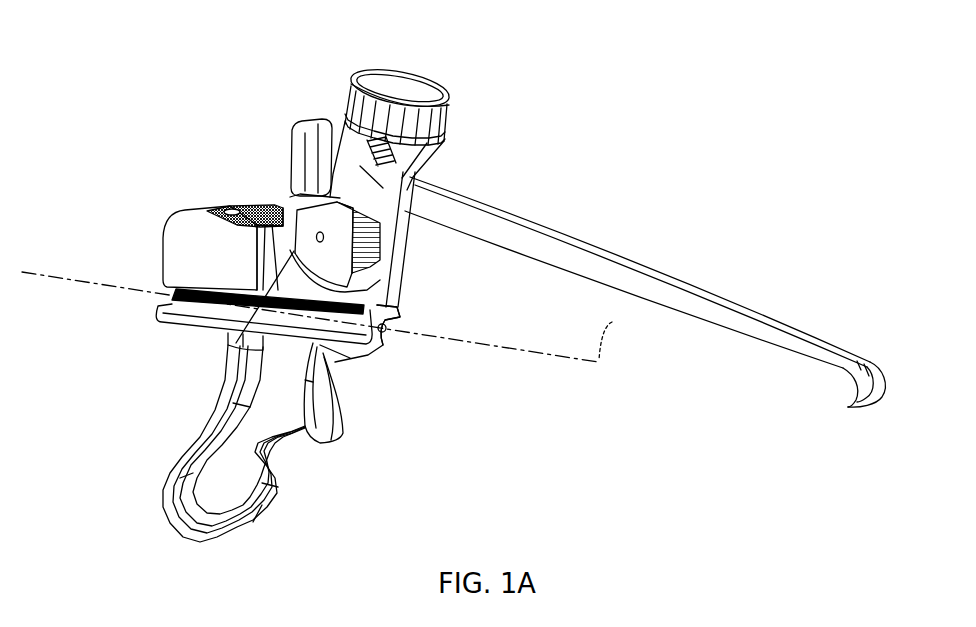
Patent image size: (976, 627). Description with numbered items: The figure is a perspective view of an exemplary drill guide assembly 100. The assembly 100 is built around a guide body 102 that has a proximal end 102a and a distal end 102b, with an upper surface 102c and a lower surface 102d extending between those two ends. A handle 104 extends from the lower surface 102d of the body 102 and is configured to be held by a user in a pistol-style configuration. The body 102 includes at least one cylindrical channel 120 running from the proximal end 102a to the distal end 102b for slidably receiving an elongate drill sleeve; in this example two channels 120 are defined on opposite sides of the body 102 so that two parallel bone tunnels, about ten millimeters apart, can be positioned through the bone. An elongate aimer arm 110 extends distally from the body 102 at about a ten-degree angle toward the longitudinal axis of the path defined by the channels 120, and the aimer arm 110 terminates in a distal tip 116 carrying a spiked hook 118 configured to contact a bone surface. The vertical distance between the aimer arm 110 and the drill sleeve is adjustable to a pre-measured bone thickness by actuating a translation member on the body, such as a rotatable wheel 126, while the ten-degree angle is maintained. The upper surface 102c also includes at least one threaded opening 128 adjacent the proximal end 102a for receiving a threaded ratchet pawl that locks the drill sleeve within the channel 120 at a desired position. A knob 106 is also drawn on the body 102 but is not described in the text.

The drill guide assembly 100 is at (176, 97).
The guide body 102 is at (400, 247).
The proximal end 102a is at (163, 253).
The distal end 102b is at (398, 287).
The upper surface 102c is at (283, 207).
The lower surface 102d is at (165, 322).
The handle 104 is at (280, 490).
The adjustment knob 106 is at (432, 163).
The aimer arm 110 is at (702, 308).
The distal tip 116 is at (886, 373).
The spiked hook 118 is at (853, 410).
The cylindrical channel 120 is at (165, 291).
The rotatable wheel 126 is at (228, 348).
The threaded opening 128 is at (230, 207).